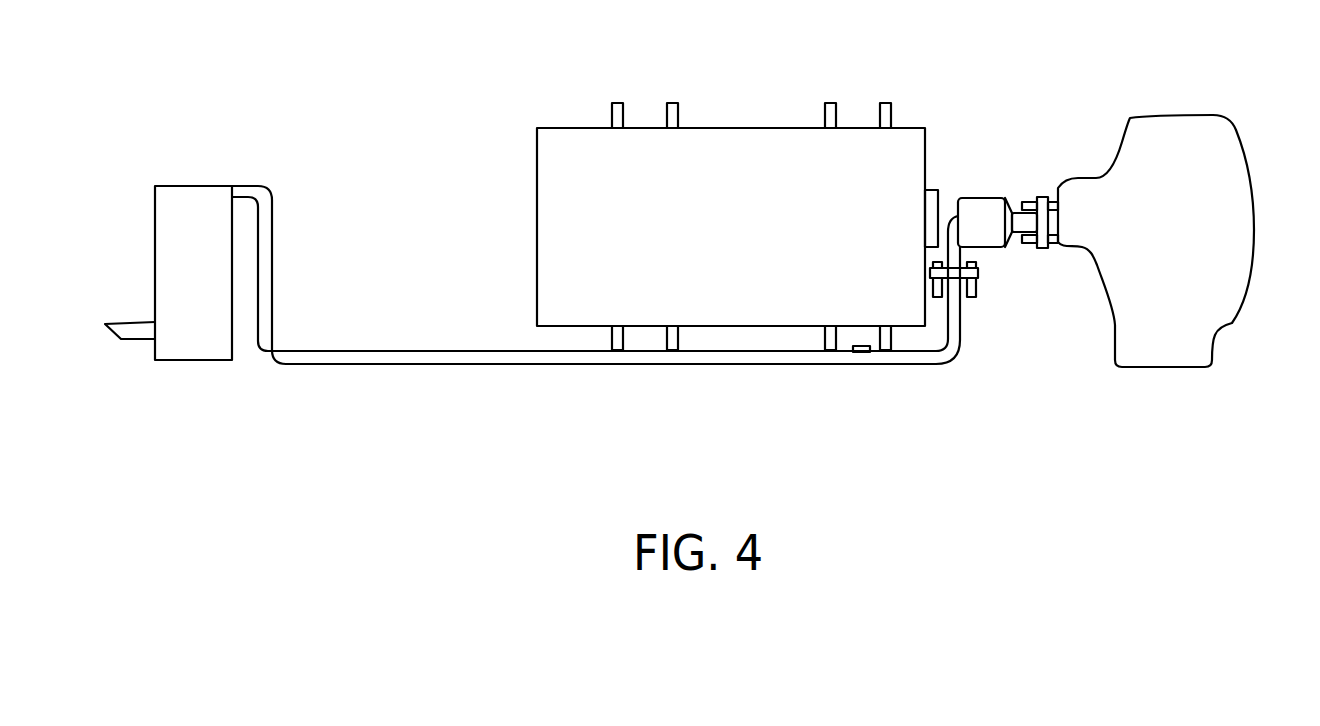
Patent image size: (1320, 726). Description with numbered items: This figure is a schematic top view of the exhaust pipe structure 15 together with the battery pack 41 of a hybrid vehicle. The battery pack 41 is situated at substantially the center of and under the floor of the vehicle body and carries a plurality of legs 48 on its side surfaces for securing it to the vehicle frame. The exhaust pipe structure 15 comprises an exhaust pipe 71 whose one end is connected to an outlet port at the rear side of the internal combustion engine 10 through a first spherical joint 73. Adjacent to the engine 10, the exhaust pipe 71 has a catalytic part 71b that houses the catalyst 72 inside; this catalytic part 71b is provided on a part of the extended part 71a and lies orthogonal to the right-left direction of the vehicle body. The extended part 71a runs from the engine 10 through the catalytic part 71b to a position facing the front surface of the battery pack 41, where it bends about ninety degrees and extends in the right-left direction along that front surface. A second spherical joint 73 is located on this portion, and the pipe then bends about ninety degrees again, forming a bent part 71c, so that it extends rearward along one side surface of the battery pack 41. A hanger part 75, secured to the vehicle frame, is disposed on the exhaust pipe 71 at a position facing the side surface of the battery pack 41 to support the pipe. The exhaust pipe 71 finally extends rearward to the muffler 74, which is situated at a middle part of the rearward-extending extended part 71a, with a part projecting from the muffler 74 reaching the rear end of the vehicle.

The internal combustion engine 10 is at (1256, 190).
The exhaust pipe structure 15 is at (1012, 282).
The battery pack 41 is at (537, 270).
The legs 48 is at (672, 103).
The exhaust pipe 71 is at (634, 298).
The extended part 71a is at (384, 350).
The catalytic part 71b is at (1004, 196).
The bent part 71c is at (953, 366).
The catalyst 72 is at (975, 197).
The spherical joint 73 is at (1040, 196).
The muffler 74 is at (204, 184).
The hanger part 75 is at (860, 345).